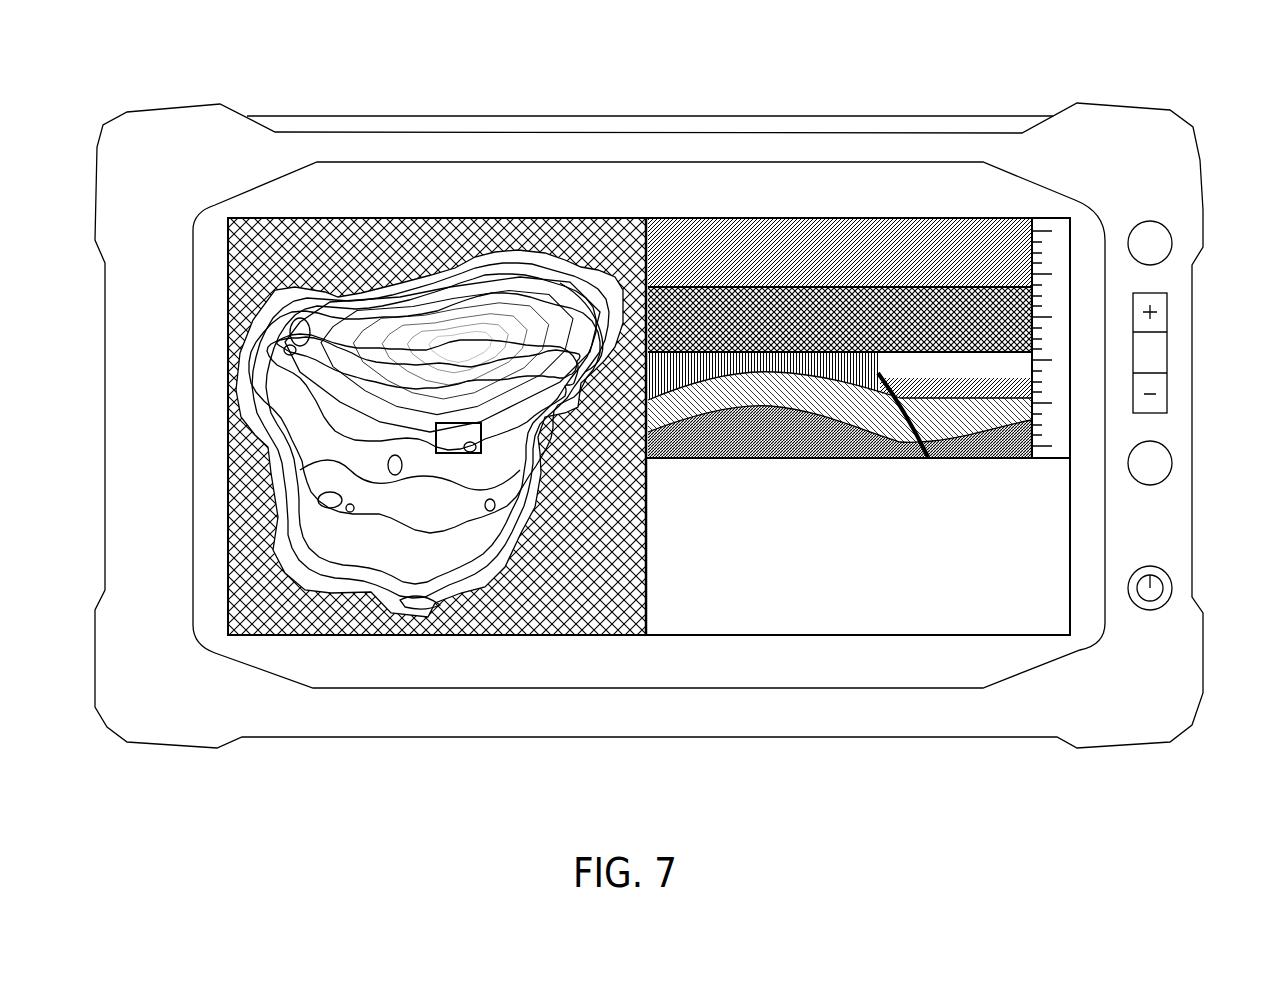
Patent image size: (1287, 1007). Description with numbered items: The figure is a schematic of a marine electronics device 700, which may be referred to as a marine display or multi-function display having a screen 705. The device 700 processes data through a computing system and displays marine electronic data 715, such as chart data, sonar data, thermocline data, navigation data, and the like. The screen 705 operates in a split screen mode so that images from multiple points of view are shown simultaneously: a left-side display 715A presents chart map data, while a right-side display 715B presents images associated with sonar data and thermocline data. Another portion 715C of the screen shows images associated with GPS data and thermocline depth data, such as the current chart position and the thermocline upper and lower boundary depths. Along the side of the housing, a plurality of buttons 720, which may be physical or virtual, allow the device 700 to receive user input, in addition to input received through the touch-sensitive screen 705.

The marine electronics device 700 is at (1188, 112).
The screen 705 is at (822, 200).
The marine electronic data 715 is at (437, 432).
The left-side display 715A is at (417, 190).
The right-side display 715B is at (718, 192).
The another portion of the screen 715C is at (837, 650).
The buttons 720 is at (1157, 243).